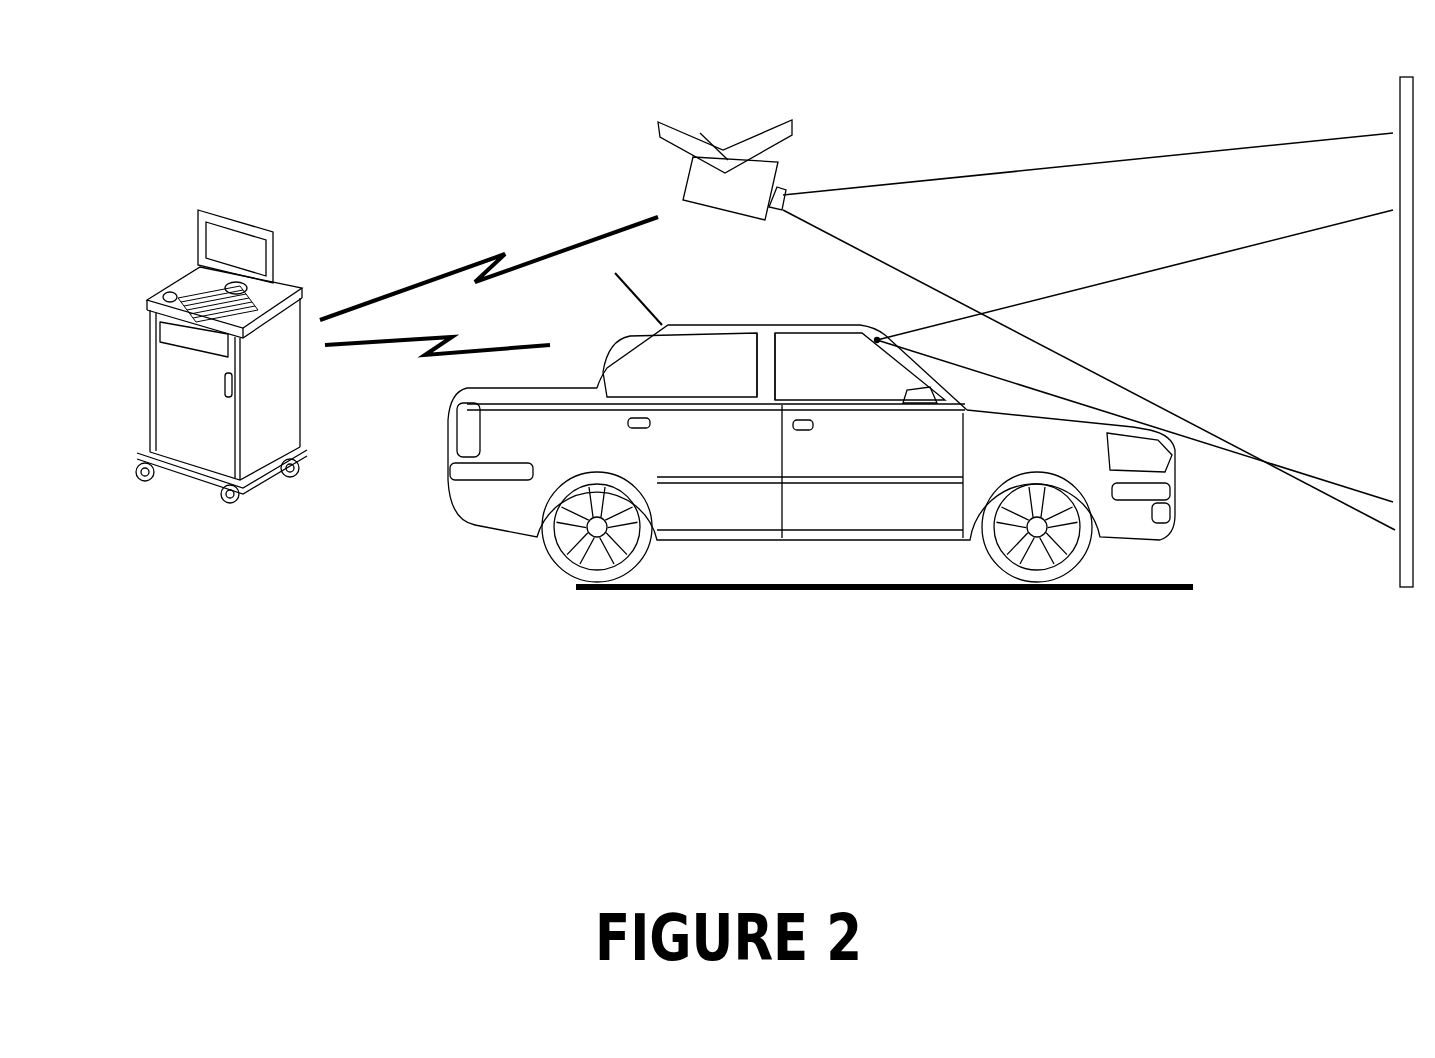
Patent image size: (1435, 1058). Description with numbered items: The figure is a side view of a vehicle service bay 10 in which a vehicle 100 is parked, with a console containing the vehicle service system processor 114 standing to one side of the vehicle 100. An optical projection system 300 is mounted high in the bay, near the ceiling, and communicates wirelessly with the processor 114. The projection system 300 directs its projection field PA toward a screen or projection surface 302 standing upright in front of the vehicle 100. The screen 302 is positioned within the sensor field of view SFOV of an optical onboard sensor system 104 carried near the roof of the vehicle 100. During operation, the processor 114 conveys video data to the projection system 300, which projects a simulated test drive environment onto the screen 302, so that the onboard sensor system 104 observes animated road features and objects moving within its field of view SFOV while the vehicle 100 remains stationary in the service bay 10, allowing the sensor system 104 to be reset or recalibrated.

The vehicle service system processor 114 is at (189, 375).
The optical projection system 300 is at (664, 170).
The screen or projection surface 302 is at (1340, 312).
The projection field PA is at (1089, 317).
The sensor field of view SFOV is at (1135, 347).
The optical onboard sensor system 104 is at (826, 310).
The vehicle 100 is at (811, 474).
The vehicle service area 10 is at (884, 631).